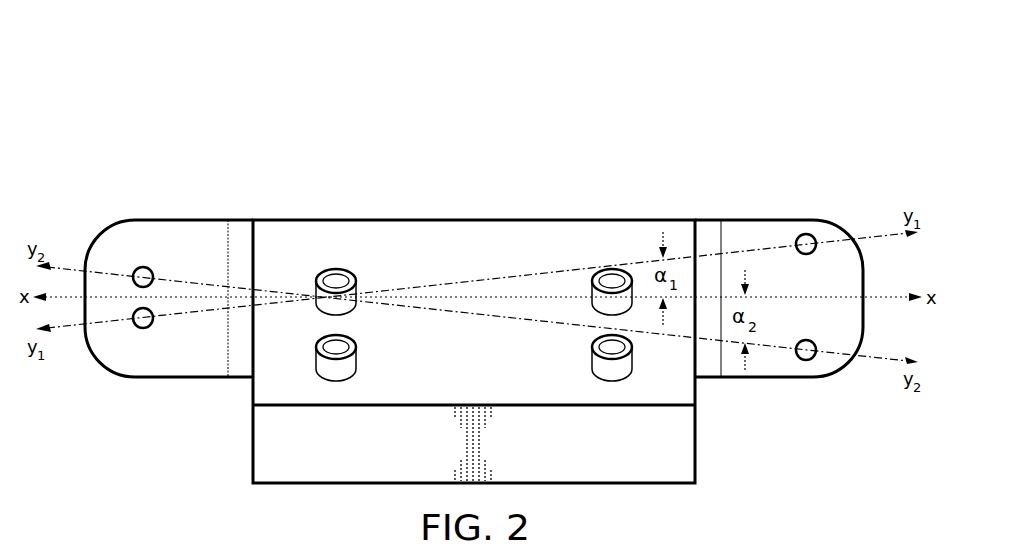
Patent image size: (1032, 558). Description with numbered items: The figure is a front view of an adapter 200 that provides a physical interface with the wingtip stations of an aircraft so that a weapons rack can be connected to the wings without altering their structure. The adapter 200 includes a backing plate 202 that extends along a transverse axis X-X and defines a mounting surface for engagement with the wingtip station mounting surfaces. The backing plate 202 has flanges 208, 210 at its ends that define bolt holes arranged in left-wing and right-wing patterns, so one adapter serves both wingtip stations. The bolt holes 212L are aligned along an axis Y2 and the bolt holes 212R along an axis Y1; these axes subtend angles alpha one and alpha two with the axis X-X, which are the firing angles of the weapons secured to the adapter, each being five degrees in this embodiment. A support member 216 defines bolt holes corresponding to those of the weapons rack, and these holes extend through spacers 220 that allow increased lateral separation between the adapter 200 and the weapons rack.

The adapter 200 is at (238, 63).
The backing plate 202 is at (757, 212).
The flange 208 is at (198, 228).
The flange 210 is at (735, 230).
The bolt holes 212R is at (143, 266).
The bolt holes 212L is at (143, 329).
The support member 216 is at (268, 390).
The spacers 220 is at (355, 310).